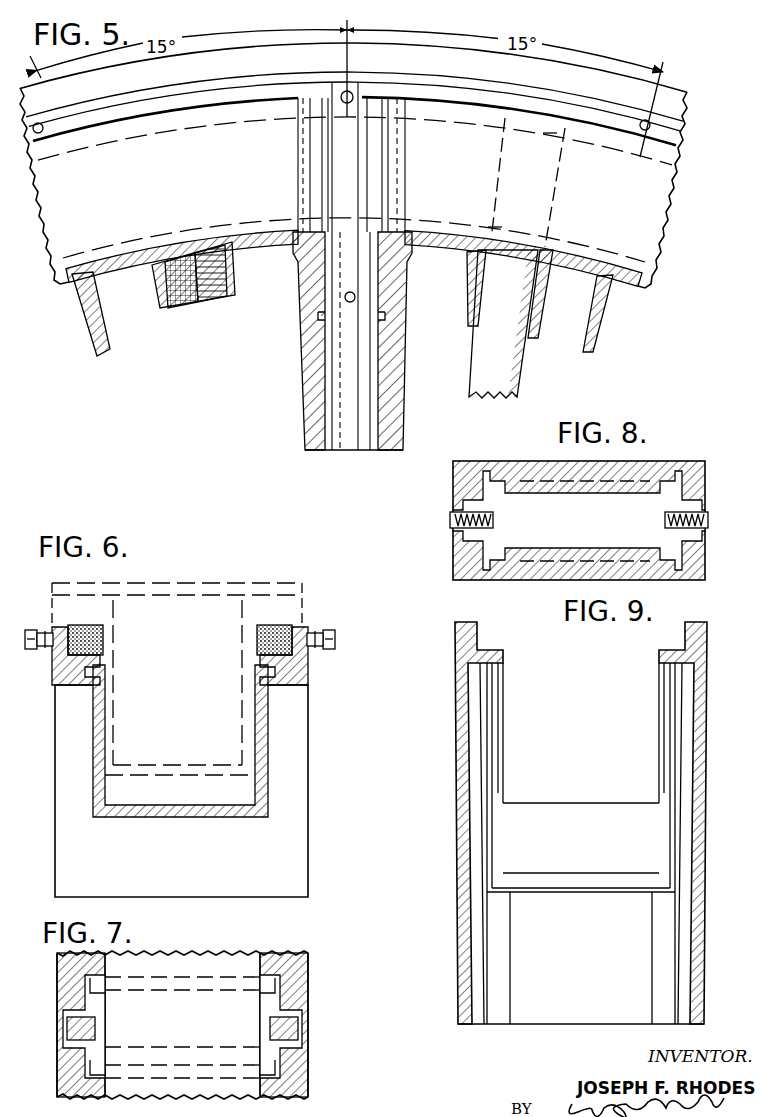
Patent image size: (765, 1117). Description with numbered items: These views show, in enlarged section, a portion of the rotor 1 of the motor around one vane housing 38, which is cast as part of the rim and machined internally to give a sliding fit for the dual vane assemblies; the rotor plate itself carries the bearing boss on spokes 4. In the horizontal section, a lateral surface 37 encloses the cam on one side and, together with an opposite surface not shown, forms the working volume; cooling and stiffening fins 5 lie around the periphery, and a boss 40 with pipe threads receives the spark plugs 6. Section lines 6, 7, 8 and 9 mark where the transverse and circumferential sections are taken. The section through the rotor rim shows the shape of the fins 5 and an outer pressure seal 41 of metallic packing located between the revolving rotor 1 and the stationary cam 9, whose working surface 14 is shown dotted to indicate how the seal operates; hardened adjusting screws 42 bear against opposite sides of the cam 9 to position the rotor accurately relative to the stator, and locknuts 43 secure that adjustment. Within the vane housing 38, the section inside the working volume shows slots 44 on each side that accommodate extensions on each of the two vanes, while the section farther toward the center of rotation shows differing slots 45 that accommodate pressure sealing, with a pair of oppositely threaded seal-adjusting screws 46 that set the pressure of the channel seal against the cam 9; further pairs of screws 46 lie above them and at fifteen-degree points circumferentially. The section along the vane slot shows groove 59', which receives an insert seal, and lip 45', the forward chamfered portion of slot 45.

In FIG. 6, the rotor 1 is at (300, 686).
In FIG. 5, the spokes 4 is at (503, 324).
In FIG. 5, the cooling and stiffening fins 5 is at (96, 318).
In FIG. 6, the cooling and stiffening fins 5 is at (211, 852).
In FIG. 5, the spark plugs 6 is at (68, 53).
In FIG. 5, the section line 7— 7 is at (283, 172).
In FIG. 5, the section line 8— 8 is at (276, 290).
In FIG. 5, the stationary cam 9 is at (336, 57).
In FIG. 6, the stationary cam 9 is at (242, 688).
In FIG. 7, the stationary cam 9 is at (330, 1015).
In FIG. 5, the working surface 14 is at (158, 236).
In FIG. 6, the working surface 14 is at (182, 776).
In FIG. 5, the lateral surface 37 is at (608, 193).
In FIG. 5, the vane housing 38 is at (307, 451).
In FIG. 7, the vane housing 38 is at (304, 955).
In FIG. 8, the vane housing 38 is at (683, 466).
In FIG. 9, the vane housing 38 is at (460, 925).
In FIG. 5, the boss 40 is at (168, 312).
In FIG. 6, the outer pressure seal 41 is at (103, 628).
In FIG. 6, the adjusting screws 42 is at (33, 650).
In FIG. 6, the locknuts 43 is at (50, 628).
In FIG. 7, the slots 44 is at (75, 1050).
In FIG. 8, the slots 44 is at (452, 505).
In FIG. 7, the slots 45 is at (181, 999).
In FIG. 8, the slots 45 is at (579, 520).
In FIG. 5, the seal-adjusting screws 46 is at (40, 122).
In FIG. 8, the seal-adjusting screws 46 is at (495, 520).
In FIG. 9, the lip 45' is at (581, 733).
In FIG. 9, the groove 59' is at (581, 843).